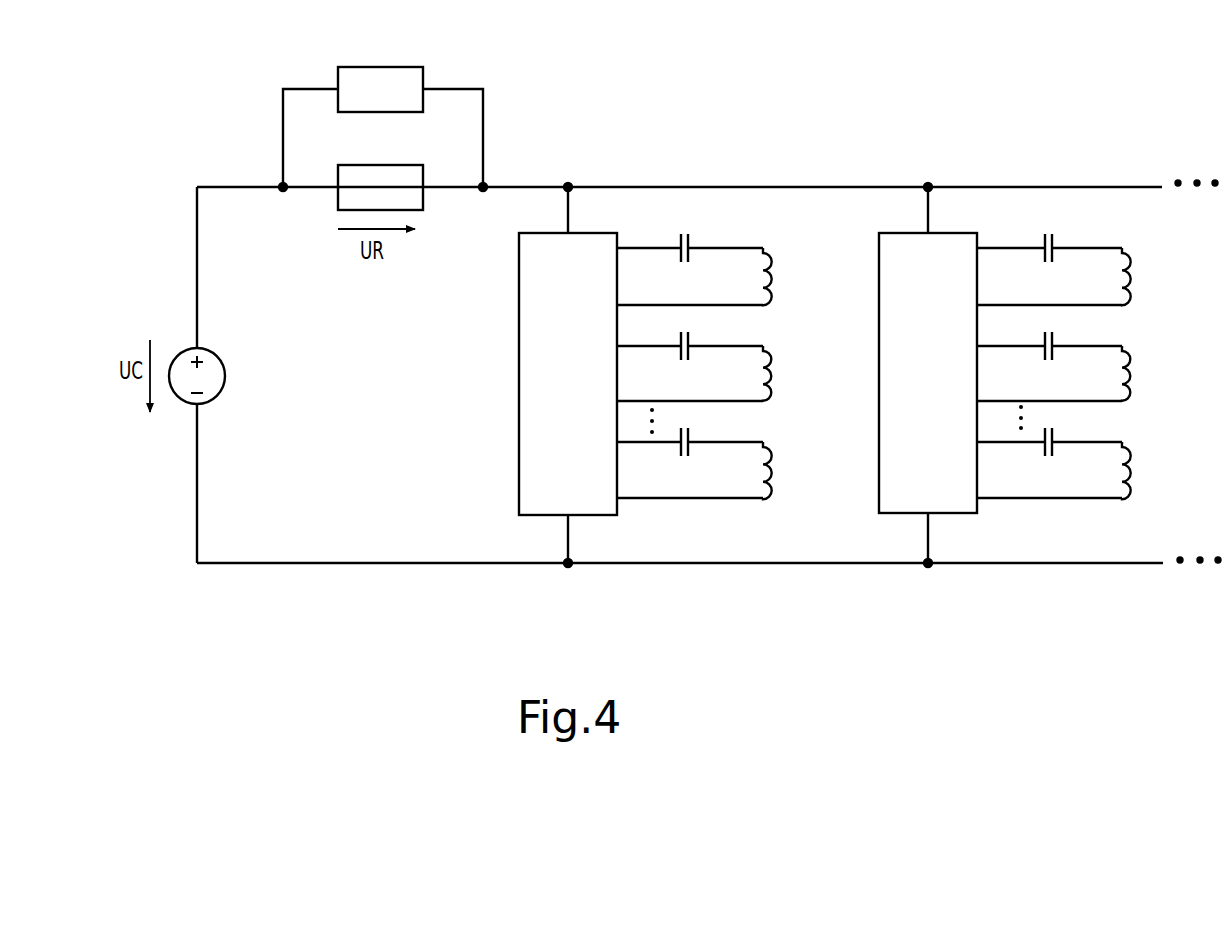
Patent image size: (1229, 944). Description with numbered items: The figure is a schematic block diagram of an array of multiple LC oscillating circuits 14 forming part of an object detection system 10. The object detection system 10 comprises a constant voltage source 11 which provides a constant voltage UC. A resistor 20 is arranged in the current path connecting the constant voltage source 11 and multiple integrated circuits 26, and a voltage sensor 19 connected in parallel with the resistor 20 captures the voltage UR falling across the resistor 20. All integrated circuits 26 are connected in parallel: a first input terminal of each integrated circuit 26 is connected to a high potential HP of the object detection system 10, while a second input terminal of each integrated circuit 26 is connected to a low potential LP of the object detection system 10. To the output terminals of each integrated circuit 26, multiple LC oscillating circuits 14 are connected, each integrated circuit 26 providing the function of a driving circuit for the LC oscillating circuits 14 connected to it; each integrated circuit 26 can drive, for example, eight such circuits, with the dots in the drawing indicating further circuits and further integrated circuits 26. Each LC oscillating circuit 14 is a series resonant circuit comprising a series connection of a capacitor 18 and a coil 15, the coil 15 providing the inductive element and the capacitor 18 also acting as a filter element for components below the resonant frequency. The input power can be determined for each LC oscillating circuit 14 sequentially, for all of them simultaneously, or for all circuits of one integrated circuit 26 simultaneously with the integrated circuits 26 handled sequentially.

The object detection system 10 is at (212, 611).
The constant voltage source 11 is at (218, 354).
The LC oscillating circuit 14 is at (647, 247).
The coil 15 is at (788, 270).
The capacitor 18 is at (690, 243).
The voltage sensor 19 is at (413, 80).
The resistor 20 is at (410, 176).
The integrated circuit 26 is at (532, 447).
The high potential HP is at (634, 186).
The low potential LP is at (757, 565).